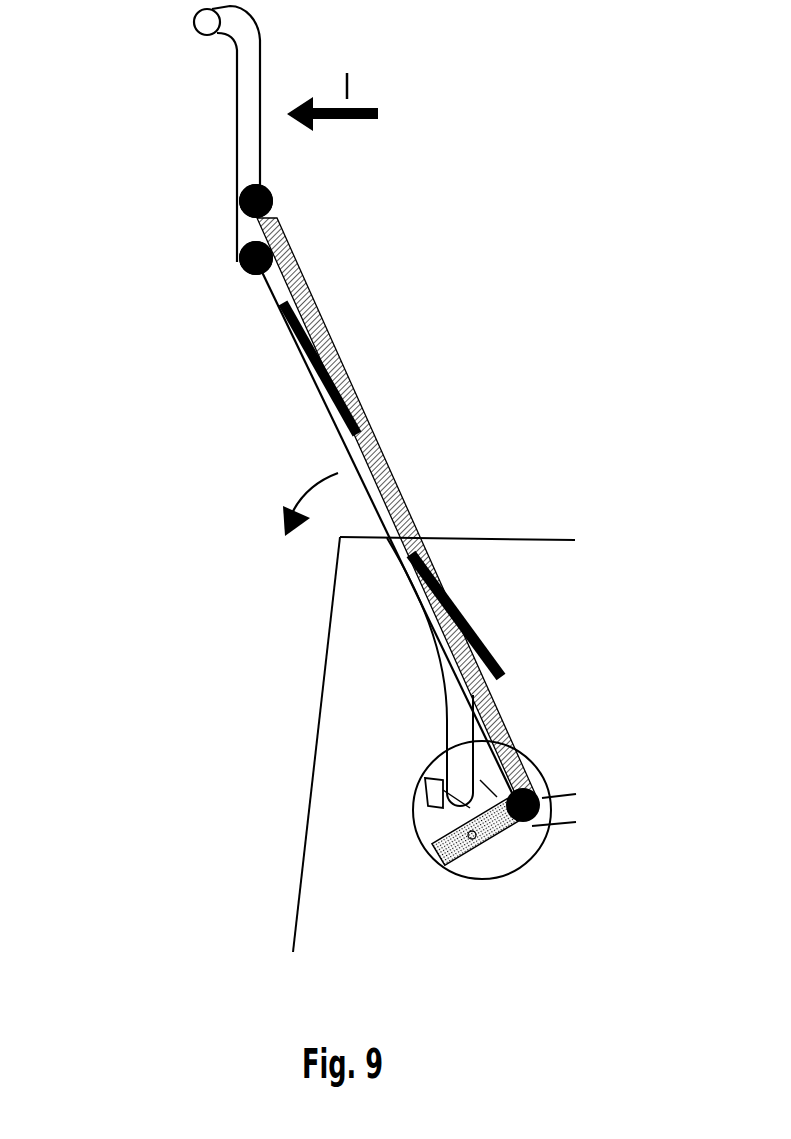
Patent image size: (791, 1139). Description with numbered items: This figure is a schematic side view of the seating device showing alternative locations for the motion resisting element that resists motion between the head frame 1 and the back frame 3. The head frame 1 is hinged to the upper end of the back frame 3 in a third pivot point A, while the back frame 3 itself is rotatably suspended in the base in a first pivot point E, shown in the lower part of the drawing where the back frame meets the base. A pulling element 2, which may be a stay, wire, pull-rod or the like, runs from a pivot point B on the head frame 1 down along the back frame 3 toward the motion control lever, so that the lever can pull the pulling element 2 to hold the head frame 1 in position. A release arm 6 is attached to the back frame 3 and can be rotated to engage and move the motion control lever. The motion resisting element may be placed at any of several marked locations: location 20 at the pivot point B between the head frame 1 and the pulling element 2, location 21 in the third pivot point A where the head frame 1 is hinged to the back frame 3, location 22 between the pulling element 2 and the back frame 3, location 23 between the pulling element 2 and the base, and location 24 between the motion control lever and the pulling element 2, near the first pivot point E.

The head frame 1 is at (250, 132).
The pulling element 2 is at (303, 285).
The back frame 3 is at (347, 443).
The release arm 6 is at (434, 528).
The location of motion resisting element 20 is at (240, 200).
The location of motion resisting element 21 is at (240, 270).
The location of motion resisting element 22 is at (332, 360).
The location of motion resisting element 23 is at (472, 622).
The location of motion resisting element 24 is at (535, 795).
The third pivot point A is at (240, 250).
The pivot point on head frame B is at (273, 201).
The first pivot point E is at (500, 878).